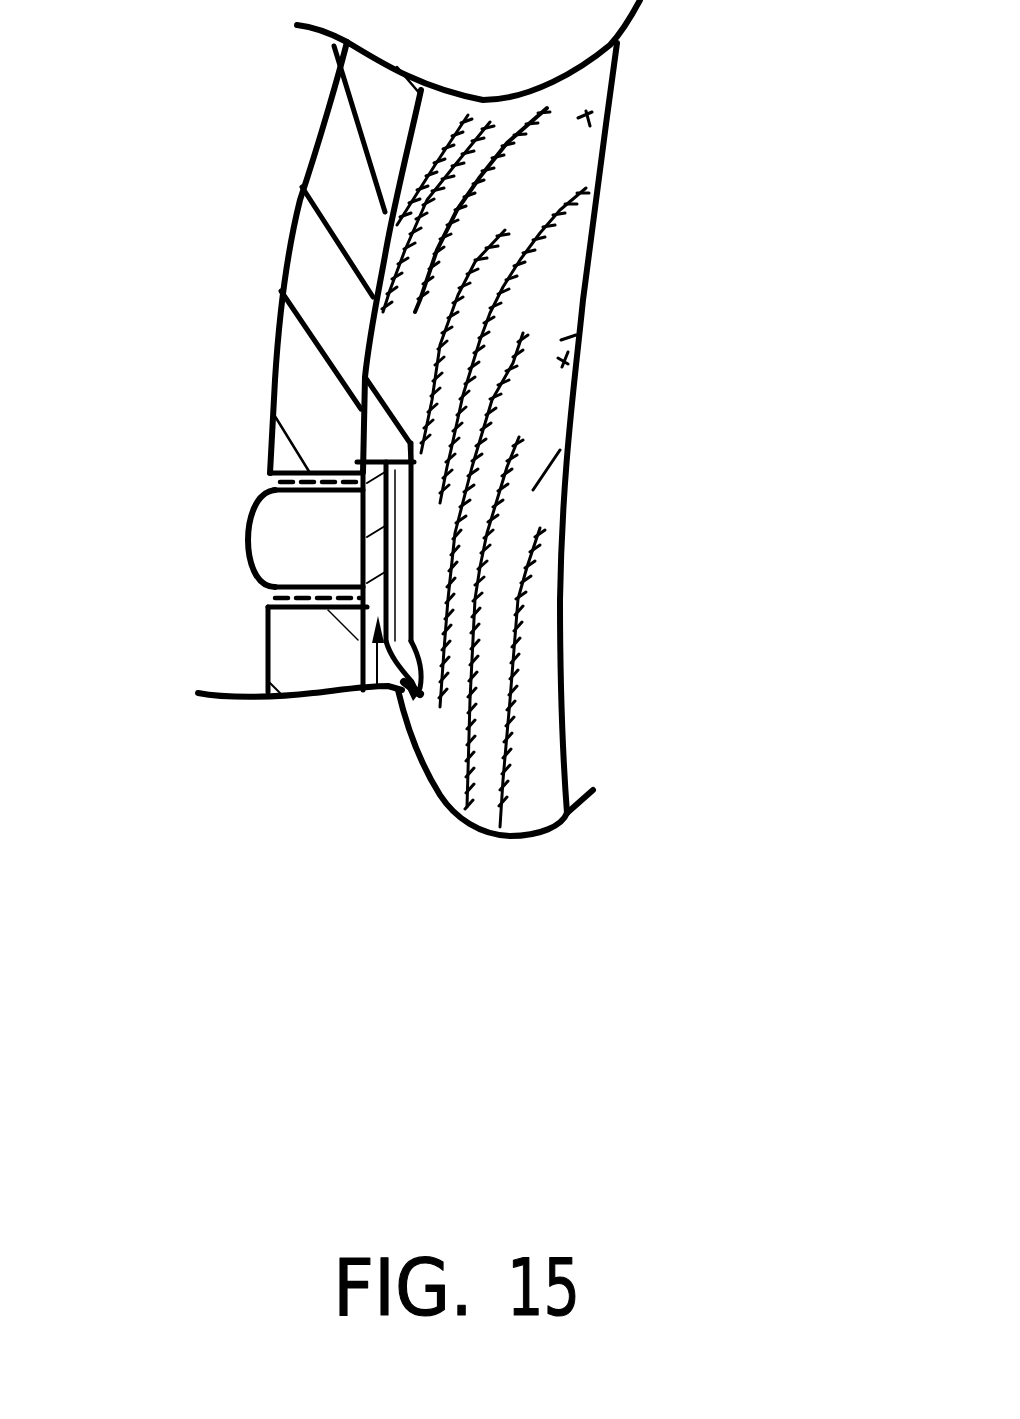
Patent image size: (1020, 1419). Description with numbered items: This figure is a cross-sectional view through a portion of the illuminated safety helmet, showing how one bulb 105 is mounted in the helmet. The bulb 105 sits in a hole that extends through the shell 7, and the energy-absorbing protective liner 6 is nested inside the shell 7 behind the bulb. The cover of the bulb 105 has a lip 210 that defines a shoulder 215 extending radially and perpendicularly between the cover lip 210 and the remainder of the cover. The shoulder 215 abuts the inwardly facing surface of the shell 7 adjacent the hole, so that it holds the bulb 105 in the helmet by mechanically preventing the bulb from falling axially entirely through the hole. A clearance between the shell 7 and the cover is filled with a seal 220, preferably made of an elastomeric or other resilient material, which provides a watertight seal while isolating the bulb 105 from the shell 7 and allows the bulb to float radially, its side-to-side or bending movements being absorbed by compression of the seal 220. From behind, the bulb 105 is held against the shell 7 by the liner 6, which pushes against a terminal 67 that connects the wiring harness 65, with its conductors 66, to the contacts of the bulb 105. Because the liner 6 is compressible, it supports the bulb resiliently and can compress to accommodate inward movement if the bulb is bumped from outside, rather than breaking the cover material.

The protective liner 6 is at (560, 277).
The shell 7 is at (313, 247).
The wiring harness 65 is at (412, 691).
The conductors 66 is at (402, 660).
The terminal 67 is at (398, 597).
The bulb 105 is at (244, 505).
The cover lip 210 is at (384, 647).
The shoulder 215 is at (373, 610).
The seal 220 is at (265, 593).